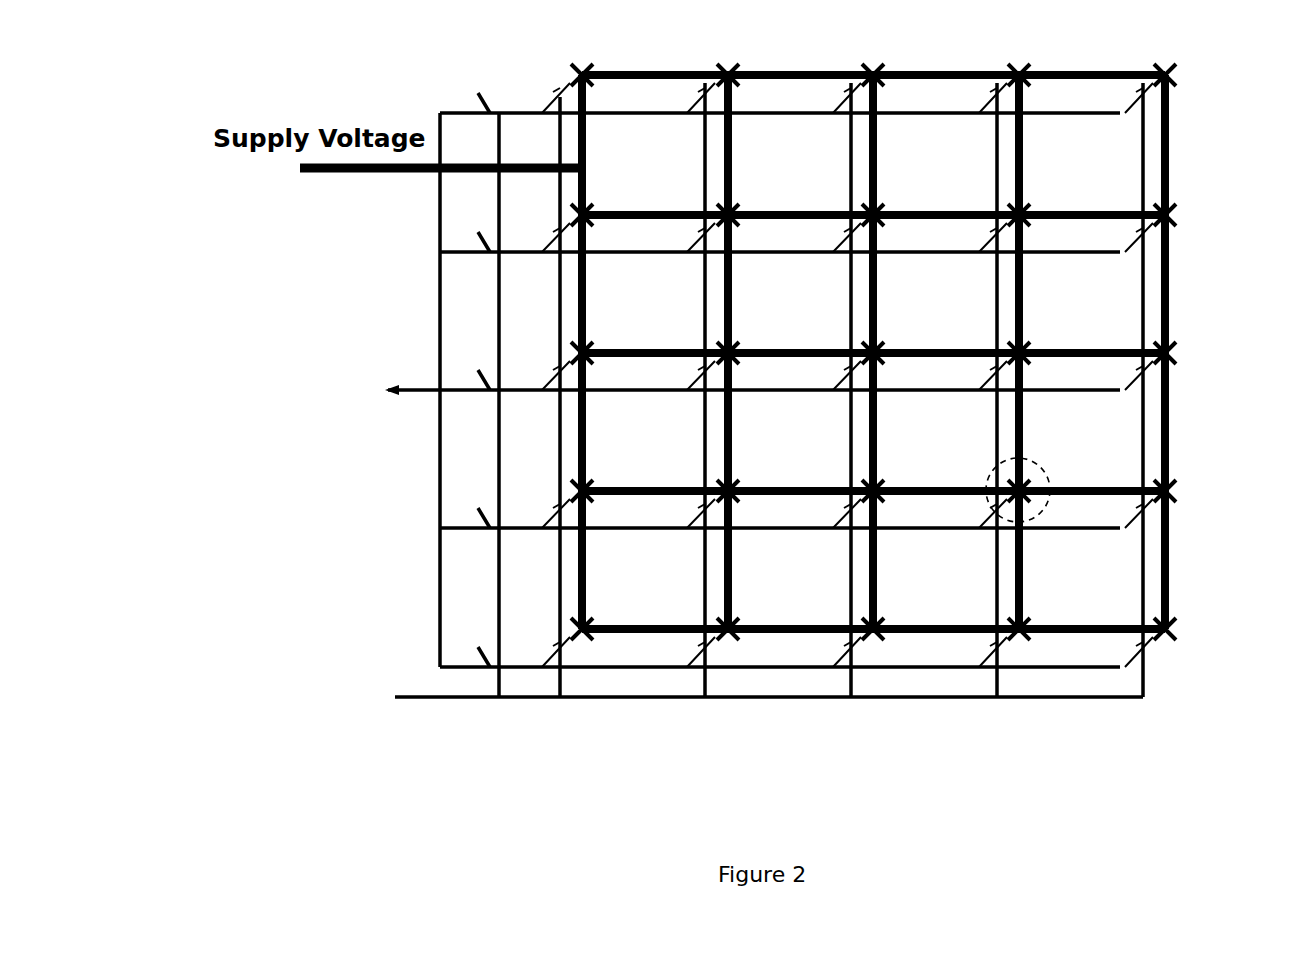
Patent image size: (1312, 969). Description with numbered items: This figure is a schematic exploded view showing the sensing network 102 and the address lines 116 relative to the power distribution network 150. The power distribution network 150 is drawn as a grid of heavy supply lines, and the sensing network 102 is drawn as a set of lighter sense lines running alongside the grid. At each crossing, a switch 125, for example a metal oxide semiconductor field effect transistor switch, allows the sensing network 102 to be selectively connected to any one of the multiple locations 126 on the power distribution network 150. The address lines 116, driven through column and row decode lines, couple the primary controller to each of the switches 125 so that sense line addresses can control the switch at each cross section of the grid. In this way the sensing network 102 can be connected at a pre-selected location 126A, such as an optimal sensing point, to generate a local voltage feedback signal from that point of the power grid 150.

The sensing network 102 is at (448, 112).
The address lines 116 is at (942, 698).
The switches 125 is at (836, 377).
The locations 126 is at (886, 336).
The pre-selected location 126A is at (1047, 470).
The power distribution network 150 is at (1222, 316).